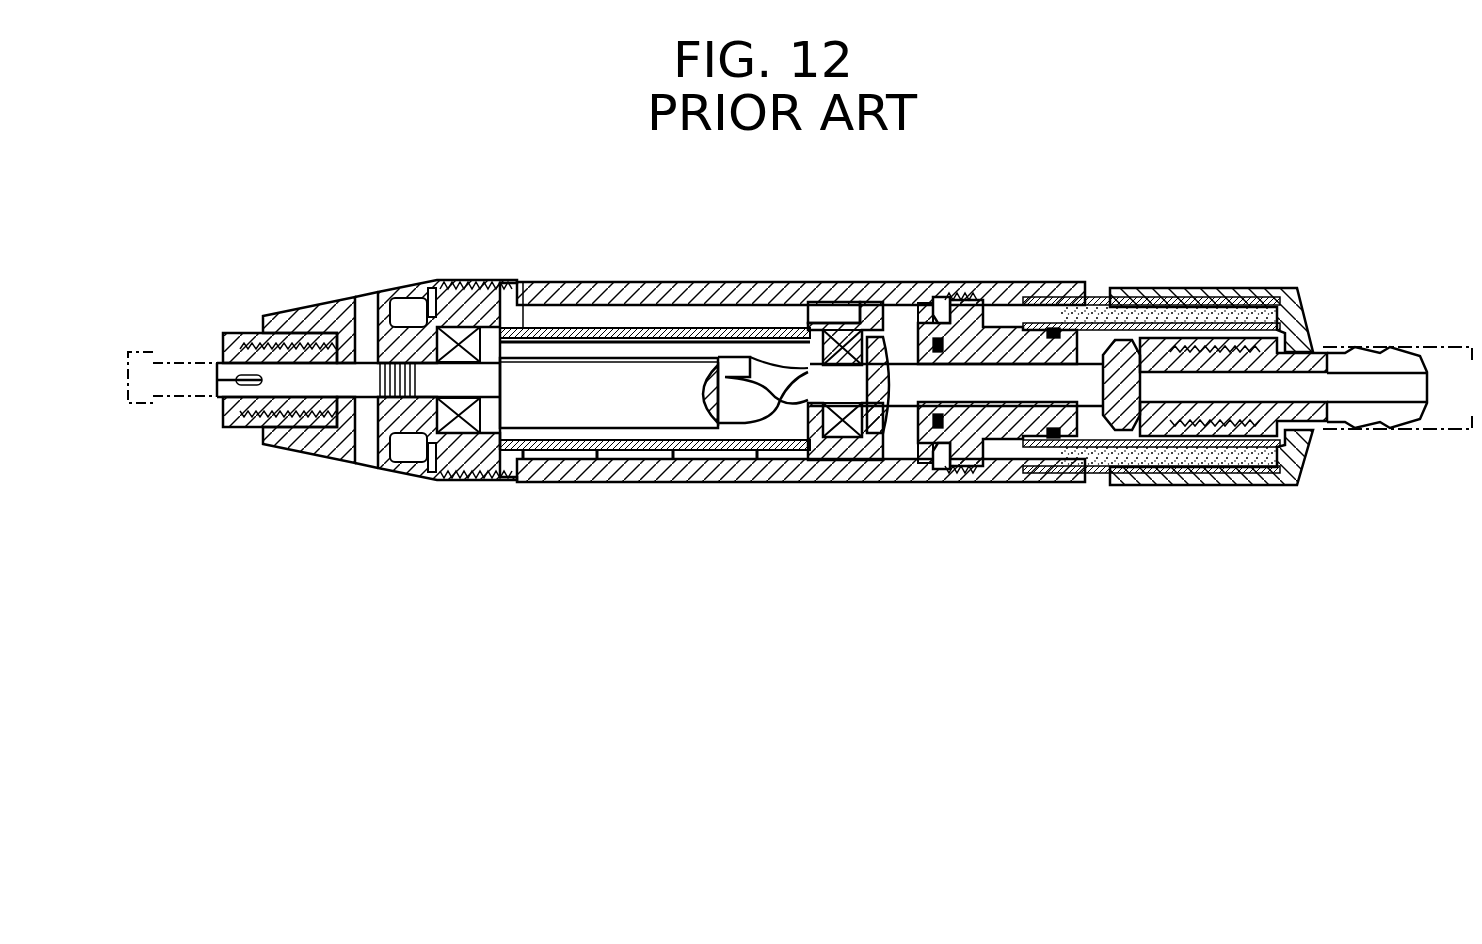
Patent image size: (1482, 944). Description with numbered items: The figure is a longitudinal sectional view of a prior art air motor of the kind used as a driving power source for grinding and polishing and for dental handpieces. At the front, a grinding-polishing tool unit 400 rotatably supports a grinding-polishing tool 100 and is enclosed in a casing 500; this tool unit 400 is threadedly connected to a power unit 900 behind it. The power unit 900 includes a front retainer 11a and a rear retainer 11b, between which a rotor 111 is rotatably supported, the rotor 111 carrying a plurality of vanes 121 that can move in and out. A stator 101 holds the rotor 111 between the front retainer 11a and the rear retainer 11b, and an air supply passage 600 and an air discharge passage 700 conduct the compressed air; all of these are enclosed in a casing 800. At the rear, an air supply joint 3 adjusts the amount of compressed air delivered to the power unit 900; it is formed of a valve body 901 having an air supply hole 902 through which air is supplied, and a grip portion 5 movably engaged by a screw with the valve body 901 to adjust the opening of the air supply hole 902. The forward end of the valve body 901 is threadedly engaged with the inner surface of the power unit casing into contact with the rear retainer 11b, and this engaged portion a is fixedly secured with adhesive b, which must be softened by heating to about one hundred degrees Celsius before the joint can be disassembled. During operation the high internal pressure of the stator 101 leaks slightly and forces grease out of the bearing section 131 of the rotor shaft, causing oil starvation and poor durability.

The grinding-polishing tool 100 is at (151, 406).
The grinding-polishing tool unit 400 is at (327, 450).
The casing 500 is at (397, 292).
The front retainer 11a is at (473, 293).
The rear retainer 11b is at (860, 300).
The bearing section 131 is at (455, 327).
The casing 800 is at (608, 293).
The stator 101 is at (637, 322).
The air supply passage 600 is at (717, 318).
The power unit 900 is at (737, 473).
The air discharge passage 700 is at (657, 452).
The rotor 111 is at (587, 410).
The vanes 121 is at (733, 363).
The air supply joint 3 is at (1013, 433).
The engaged portion a is at (960, 297).
The adhesive b is at (948, 483).
The air supply hole 902 is at (1143, 323).
The grip portion 5 is at (1240, 292).
The valve body 901 is at (1220, 427).